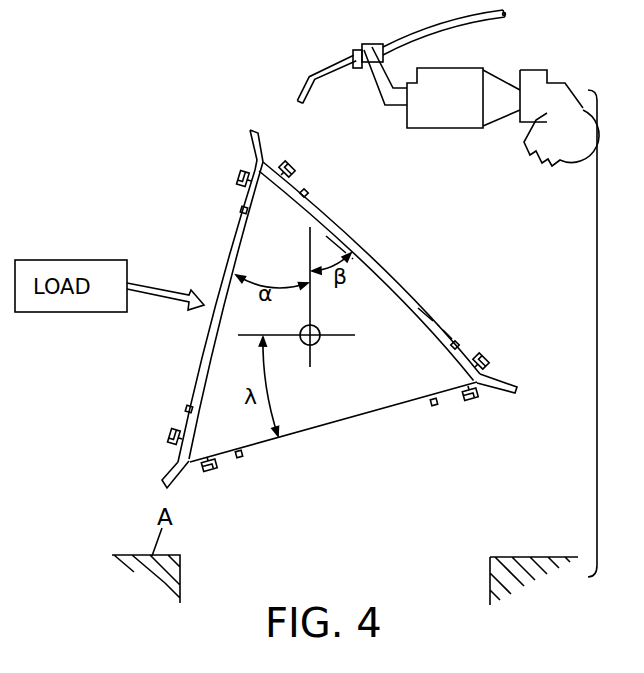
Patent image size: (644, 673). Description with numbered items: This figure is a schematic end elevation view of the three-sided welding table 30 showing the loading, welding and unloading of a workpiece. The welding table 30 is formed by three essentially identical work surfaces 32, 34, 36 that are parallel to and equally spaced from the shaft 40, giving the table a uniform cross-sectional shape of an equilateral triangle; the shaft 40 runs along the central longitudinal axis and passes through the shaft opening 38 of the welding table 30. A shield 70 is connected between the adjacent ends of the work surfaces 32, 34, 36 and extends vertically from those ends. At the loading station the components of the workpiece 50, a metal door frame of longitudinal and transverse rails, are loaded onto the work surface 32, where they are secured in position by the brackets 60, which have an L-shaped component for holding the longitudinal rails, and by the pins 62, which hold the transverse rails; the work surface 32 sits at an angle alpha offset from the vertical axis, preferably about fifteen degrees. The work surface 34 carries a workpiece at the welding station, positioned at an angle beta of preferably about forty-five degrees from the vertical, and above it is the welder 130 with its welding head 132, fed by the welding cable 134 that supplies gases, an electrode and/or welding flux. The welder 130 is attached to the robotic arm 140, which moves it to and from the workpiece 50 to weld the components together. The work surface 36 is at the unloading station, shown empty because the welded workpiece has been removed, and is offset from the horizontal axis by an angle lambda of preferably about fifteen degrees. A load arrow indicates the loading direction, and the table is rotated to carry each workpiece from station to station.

The welding table 30 is at (315, 336).
The work surface 32 is at (233, 250).
The work surface 34 is at (385, 270).
The work surface 36 is at (391, 415).
The shaft opening 38 is at (318, 328).
The shaft 40 is at (318, 344).
The workpiece 50 is at (193, 355).
The brackets 60 is at (238, 178).
The pins 62 is at (242, 210).
The shield 70 is at (250, 131).
The welder 130 is at (413, 110).
The welding head 132 is at (303, 80).
The welding cable 134 is at (460, 26).
The robotic arm 140 is at (556, 160).